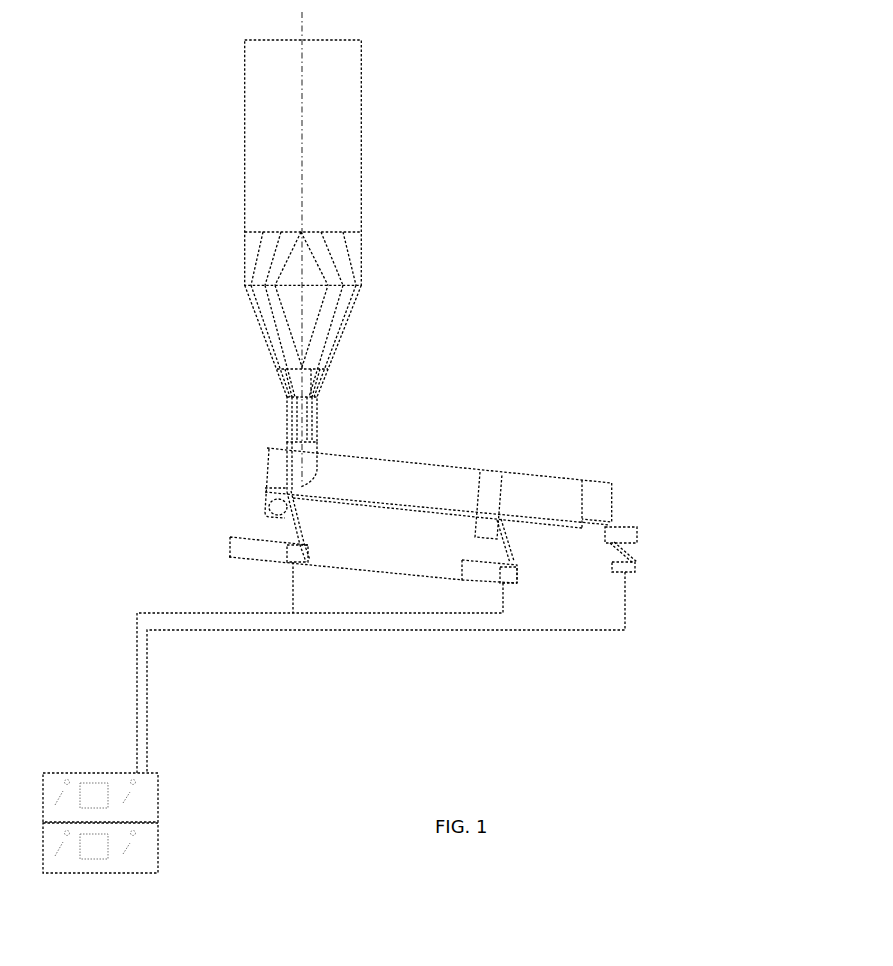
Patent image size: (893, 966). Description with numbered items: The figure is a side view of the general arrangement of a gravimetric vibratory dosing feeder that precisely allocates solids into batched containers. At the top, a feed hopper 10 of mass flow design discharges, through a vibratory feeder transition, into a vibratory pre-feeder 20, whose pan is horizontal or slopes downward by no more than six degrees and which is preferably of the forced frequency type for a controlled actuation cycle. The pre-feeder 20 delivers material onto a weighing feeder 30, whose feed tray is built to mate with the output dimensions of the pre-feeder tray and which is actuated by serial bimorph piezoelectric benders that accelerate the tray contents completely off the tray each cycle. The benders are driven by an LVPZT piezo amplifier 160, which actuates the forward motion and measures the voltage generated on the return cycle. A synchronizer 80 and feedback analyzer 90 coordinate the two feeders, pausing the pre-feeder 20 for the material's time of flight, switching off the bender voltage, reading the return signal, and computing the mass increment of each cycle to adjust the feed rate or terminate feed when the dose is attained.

The feed hopper 10 is at (243, 260).
The vibratory pre-feeder 20 is at (243, 487).
The weighing feeder 30 is at (637, 538).
The LVPZT piezo amplifier 160 is at (160, 797).
The synchronizer 80 is at (185, 848).
The feedback analyzer 90 is at (160, 848).